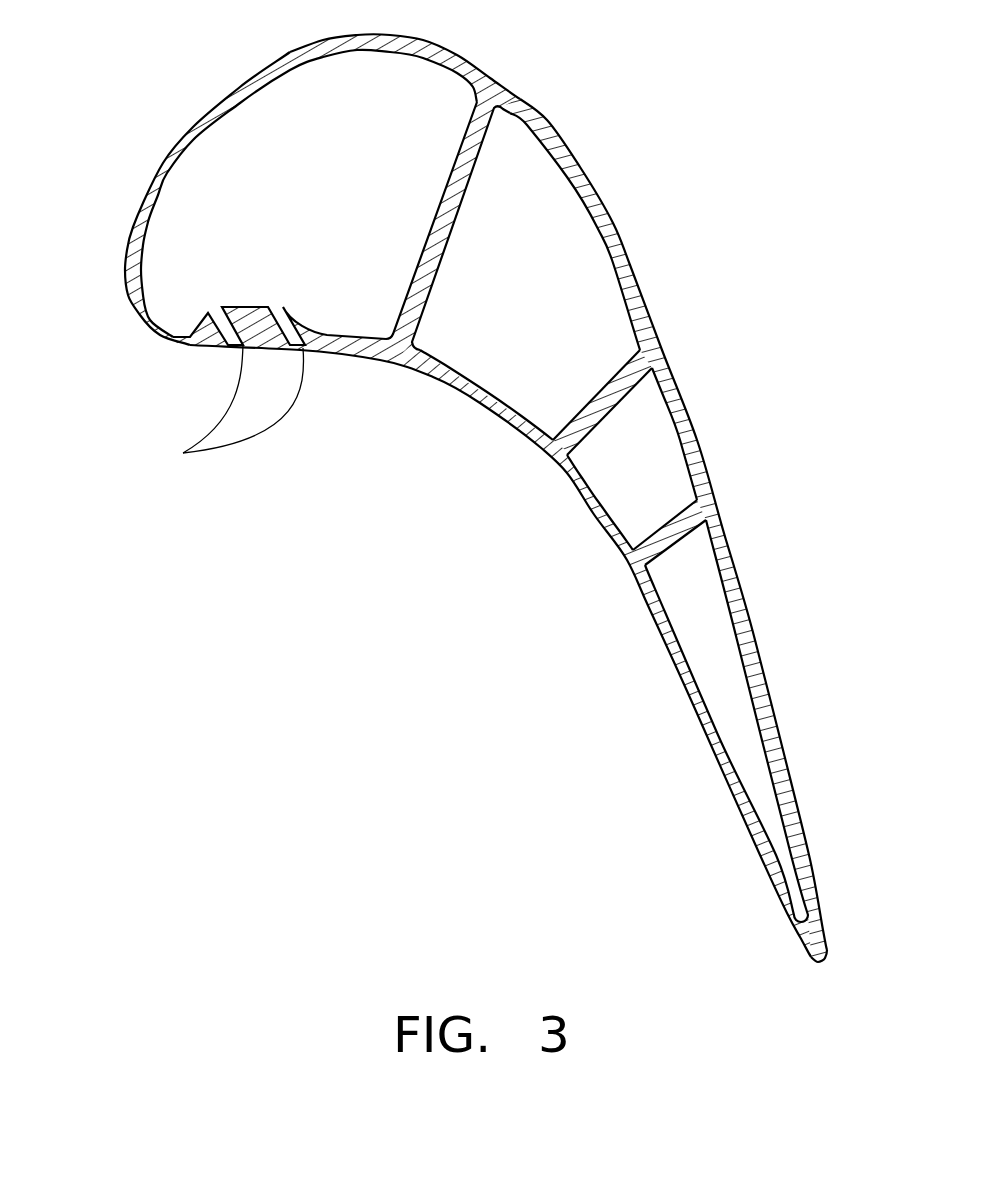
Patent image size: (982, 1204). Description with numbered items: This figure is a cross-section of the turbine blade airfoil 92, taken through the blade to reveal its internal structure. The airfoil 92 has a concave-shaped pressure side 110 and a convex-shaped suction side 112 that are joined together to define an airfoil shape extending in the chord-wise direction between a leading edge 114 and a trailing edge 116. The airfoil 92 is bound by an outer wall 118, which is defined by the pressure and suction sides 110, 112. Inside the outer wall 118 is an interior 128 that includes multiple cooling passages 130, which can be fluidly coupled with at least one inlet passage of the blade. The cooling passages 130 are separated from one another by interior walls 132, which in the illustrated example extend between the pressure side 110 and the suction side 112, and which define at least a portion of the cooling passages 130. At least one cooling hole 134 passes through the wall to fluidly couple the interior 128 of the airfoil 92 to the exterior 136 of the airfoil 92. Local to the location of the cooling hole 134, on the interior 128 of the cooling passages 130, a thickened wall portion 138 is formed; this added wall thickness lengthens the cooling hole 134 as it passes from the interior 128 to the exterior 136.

The airfoil 92 is at (521, 90).
The pressure side 110 is at (537, 453).
The suction side 112 is at (613, 223).
The leading edge 114 is at (143, 200).
The trailing edge 116 is at (812, 963).
The outer wall 118 is at (477, 393).
The interior 128 is at (398, 83).
The cooling passages 130 is at (341, 204).
The interior walls 132 is at (440, 216).
The cooling hole 134 is at (218, 409).
The exterior 136 is at (374, 572).
The thickened wall portion 138 is at (240, 297).